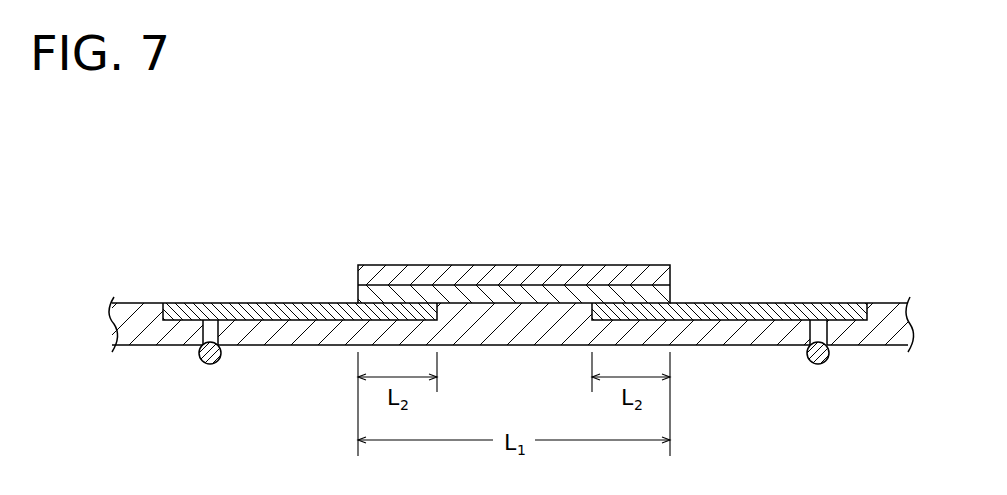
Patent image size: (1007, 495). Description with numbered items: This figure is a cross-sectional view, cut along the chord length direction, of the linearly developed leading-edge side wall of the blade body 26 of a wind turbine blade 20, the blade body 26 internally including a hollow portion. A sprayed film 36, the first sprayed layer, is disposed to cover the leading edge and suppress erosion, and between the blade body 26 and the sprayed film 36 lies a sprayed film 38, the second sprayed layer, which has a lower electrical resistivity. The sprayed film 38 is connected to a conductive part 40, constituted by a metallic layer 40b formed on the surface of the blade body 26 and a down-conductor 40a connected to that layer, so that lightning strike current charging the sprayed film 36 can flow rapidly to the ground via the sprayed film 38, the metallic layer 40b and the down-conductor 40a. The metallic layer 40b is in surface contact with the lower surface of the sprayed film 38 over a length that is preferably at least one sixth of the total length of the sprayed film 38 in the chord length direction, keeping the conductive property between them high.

The wind turbine blade 20 is at (529, 119).
The blade body 26 is at (893, 318).
The sprayed film 36 is at (607, 265).
The sprayed film 38 is at (673, 300).
The conductive part 40 is at (115, 212).
The down-conductor 40a is at (199, 354).
The metallic layer 40b is at (233, 303).